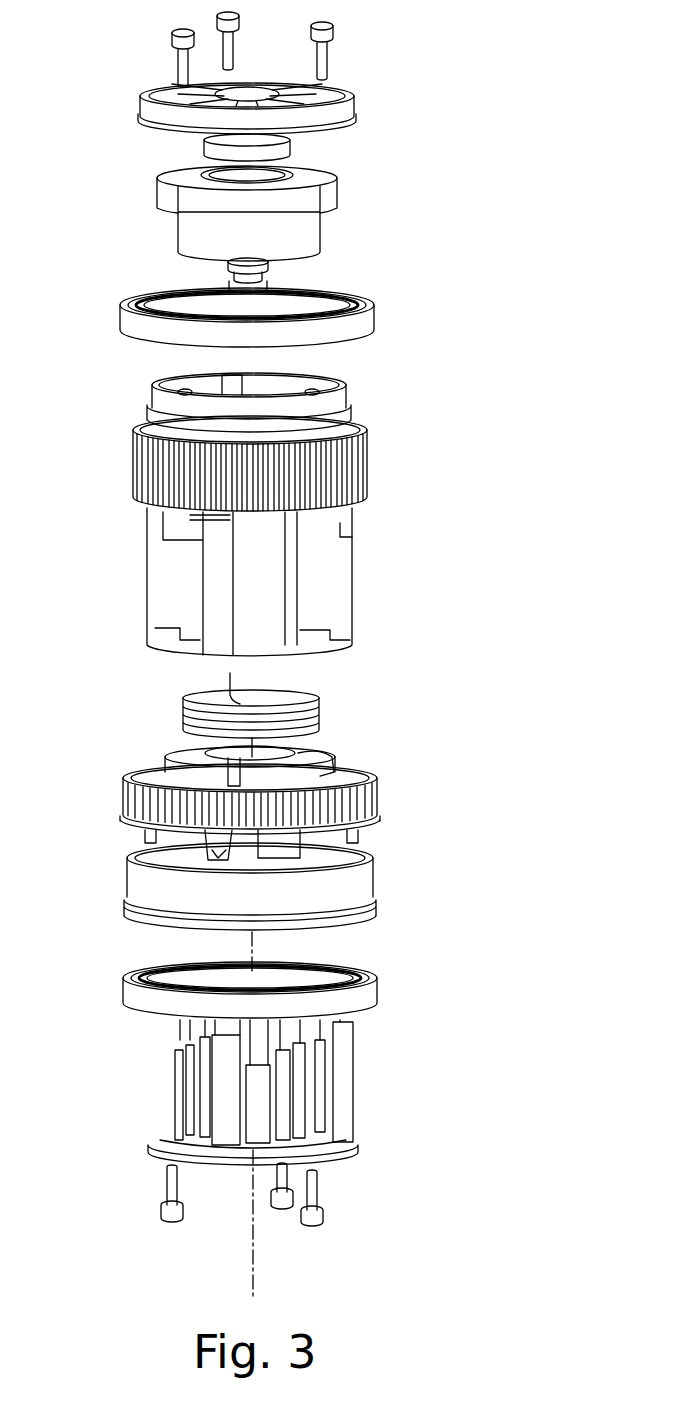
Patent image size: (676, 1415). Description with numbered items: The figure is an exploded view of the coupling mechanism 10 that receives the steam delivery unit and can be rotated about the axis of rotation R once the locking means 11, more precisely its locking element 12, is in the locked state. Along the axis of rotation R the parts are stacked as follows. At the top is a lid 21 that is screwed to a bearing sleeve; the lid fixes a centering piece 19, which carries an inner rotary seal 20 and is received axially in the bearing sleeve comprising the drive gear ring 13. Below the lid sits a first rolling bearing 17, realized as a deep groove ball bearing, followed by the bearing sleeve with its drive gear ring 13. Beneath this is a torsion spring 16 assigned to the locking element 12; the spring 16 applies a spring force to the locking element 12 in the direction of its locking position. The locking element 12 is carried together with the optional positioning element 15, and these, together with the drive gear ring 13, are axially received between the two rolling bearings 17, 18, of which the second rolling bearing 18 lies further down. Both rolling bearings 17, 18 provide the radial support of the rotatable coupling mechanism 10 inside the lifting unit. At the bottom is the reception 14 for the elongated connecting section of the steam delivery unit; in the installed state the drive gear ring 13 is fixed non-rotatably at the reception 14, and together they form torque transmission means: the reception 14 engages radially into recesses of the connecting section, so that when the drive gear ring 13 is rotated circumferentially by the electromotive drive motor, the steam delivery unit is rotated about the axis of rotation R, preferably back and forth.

The coupling mechanism 10 is at (476, 833).
The locking means 11 is at (122, 792).
The locking element 12 is at (330, 758).
The drive gear ring 13 is at (132, 440).
The reception 14 is at (172, 1060).
The positioning element 15 is at (125, 880).
The spring 16 is at (178, 705).
The rolling bearing 17 is at (127, 320).
The rolling bearing 18 is at (125, 997).
The centering piece 19 is at (190, 203).
The inner rotary seal 20 is at (190, 145).
The lid 21 is at (140, 103).
The axis of rotation R is at (253, 1230).